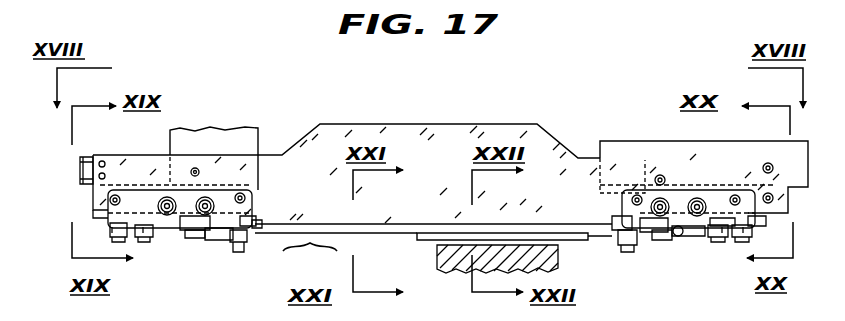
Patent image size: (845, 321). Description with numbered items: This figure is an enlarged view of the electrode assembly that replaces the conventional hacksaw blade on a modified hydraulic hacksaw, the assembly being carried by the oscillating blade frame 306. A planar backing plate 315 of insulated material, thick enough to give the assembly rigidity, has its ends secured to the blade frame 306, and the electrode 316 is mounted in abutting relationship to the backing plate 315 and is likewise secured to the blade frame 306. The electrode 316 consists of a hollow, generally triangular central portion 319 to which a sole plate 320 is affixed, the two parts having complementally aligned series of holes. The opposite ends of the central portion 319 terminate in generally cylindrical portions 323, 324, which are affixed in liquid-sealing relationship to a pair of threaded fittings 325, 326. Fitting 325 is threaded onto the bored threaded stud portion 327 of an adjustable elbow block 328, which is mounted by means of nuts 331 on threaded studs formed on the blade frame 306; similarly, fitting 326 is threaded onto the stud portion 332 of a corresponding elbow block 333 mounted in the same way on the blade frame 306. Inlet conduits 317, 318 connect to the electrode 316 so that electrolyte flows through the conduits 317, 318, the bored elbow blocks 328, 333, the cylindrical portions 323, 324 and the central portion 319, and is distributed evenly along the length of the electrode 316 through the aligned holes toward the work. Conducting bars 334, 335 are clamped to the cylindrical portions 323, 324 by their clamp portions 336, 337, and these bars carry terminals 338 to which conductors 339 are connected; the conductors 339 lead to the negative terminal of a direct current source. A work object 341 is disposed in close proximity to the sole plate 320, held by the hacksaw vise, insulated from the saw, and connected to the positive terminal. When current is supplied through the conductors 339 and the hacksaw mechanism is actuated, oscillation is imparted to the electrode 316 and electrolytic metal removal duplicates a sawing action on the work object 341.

The blade frame 306 is at (224, 130).
The backing plate 315 is at (397, 130).
The electrode 316 is at (310, 259).
The inlet conduit 317 is at (172, 238).
The inlet conduit 318 is at (688, 232).
The central portion 319 is at (384, 227).
The sole plate 320 is at (451, 238).
The cylindrical cross-section portion 323 is at (620, 235).
The cylindrical cross-section portion 324 is at (252, 232).
The threaded fitting 325 is at (220, 240).
The threaded fitting 326 is at (656, 230).
The threaded stud portion 327 is at (184, 231).
The adjustable elbow block 328 is at (175, 236).
The nuts 331 is at (221, 198).
The stud portion 332 is at (667, 232).
The elbow block 333 is at (728, 232).
The conducting bar 334 is at (105, 218).
The conducting bar 335 is at (758, 222).
The clamp portion 336 is at (256, 223).
The clamp portion 337 is at (625, 230).
The terminals 338 is at (143, 226).
The conductors 339 is at (138, 231).
The work object 341 is at (440, 258).